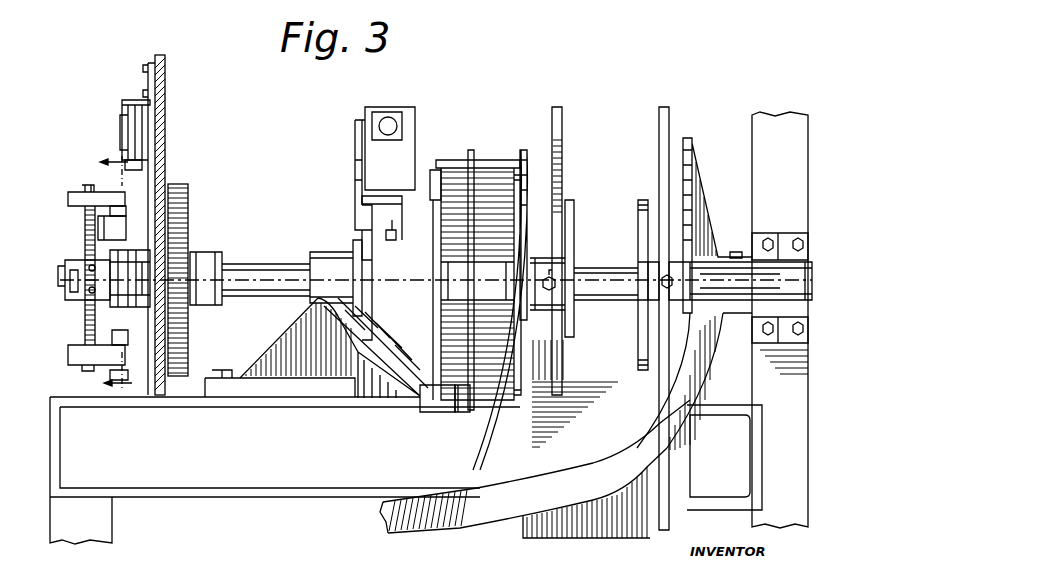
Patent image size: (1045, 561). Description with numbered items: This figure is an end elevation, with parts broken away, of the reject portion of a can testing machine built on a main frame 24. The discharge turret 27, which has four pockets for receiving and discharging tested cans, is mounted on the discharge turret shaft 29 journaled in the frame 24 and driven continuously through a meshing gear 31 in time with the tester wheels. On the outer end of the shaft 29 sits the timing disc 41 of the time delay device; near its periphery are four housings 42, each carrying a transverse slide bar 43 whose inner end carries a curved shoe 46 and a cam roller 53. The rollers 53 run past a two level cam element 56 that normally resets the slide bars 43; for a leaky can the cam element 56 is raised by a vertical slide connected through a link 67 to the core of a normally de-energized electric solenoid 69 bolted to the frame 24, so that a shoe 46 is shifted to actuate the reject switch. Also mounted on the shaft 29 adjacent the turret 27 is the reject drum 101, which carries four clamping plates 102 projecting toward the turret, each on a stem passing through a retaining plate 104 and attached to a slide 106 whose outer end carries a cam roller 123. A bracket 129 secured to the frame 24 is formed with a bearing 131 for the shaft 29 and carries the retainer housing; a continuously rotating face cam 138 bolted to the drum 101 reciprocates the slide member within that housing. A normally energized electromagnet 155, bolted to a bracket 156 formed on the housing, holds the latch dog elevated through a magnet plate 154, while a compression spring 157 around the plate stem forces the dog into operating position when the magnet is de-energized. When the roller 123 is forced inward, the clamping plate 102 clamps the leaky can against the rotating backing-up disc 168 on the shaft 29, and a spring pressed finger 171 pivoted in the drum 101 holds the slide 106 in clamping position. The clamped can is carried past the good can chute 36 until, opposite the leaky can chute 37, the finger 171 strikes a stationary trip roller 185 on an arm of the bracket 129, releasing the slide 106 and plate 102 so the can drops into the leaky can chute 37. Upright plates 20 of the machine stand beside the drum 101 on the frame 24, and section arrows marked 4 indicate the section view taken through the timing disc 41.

The section line 4- 4 is at (104, 273).
The side plate 20 is at (562, 122).
The frame 24 is at (165, 80).
The discharge turret 27 is at (640, 206).
The discharge turret shaft 29 is at (258, 264).
The meshing gear 31 is at (190, 190).
The good can chute 36 is at (594, 525).
The leaky can chute 37 is at (474, 518).
The timing disc 41 is at (85, 338).
The housing 42 is at (70, 208).
The slide bar 43 is at (62, 292).
The curved shoe 46 is at (112, 206).
The cam roller 53 is at (118, 216).
The two level cam element 56 is at (98, 230).
The link 67 is at (142, 167).
The electric solenoid 69 is at (122, 131).
The reject drum 101 is at (490, 165).
The clamping plate 102 is at (548, 178).
The retaining plate 104 is at (522, 220).
The slide 106 is at (450, 162).
The cam roller 123 is at (434, 185).
The bracket 129 is at (270, 352).
The bearing 131 is at (322, 252).
The face cam 138 is at (398, 366).
The magnet plate 154 is at (362, 199).
The electromagnet 155 is at (390, 148).
The bracket 156 is at (358, 167).
The compression spring 157 is at (392, 230).
The backing-up disc 168 is at (692, 158).
The spring pressed finger 171 is at (480, 258).
The trip roller 185 is at (466, 412).